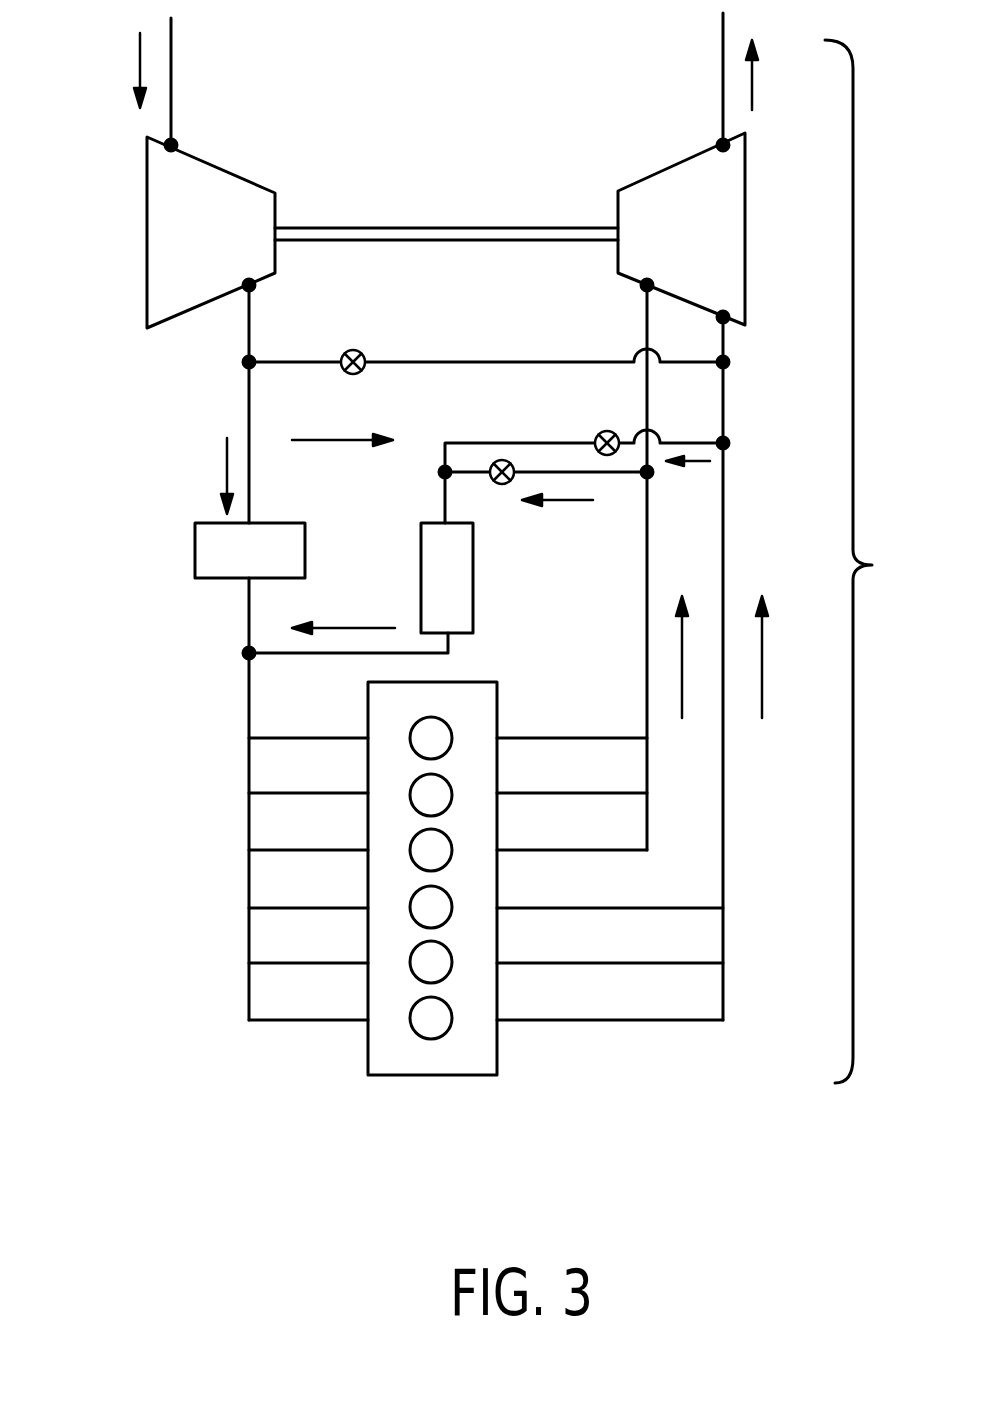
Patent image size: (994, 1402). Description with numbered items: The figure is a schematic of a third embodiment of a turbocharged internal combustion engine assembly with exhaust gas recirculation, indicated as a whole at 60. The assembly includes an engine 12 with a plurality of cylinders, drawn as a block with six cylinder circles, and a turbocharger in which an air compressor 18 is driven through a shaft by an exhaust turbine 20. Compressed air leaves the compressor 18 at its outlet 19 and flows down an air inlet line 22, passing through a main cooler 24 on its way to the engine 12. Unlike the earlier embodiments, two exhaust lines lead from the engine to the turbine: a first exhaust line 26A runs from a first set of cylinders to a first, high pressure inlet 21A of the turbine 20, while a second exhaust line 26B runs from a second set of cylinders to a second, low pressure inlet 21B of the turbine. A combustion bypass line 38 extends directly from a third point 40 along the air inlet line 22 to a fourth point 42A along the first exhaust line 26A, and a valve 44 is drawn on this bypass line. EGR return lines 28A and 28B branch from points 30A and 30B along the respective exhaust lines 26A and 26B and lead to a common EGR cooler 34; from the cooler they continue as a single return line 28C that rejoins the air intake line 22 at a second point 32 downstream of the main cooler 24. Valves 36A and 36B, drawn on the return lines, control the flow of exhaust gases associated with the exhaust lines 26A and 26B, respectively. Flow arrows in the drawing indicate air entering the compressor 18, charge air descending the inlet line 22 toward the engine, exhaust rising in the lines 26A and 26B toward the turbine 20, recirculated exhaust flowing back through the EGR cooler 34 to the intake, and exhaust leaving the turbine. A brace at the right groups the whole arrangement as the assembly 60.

The engine 12 is at (433, 1075).
The air compressor 18 is at (147, 200).
The compressor outlet 19 is at (249, 285).
The exhaust turbine 20 is at (750, 256).
The first, high pressure inlet 21A is at (723, 317).
The second, low pressure inlet 21B is at (647, 285).
The air inlet line 22 is at (249, 615).
The main cooler 24 is at (195, 552).
The first exhaust line 26A is at (729, 802).
The second exhaust line 26B is at (647, 637).
The EGR return line 28A is at (697, 441).
The EGR return line 28B is at (600, 475).
The single return line 28C is at (300, 653).
The point along first exhaust line 30A is at (723, 443).
The point along second exhaust line 30B is at (647, 472).
The second point 32 is at (249, 653).
The EGR cooler 34 is at (421, 570).
The valve 36A is at (598, 435).
The valve 36B is at (502, 485).
The combustion bypass line 38 is at (453, 362).
The third point 40 is at (249, 362).
The fourth point 42A is at (723, 362).
The bypass valve 44 is at (353, 350).
The turbocharged internal combustion engine assembly 60 is at (871, 561).